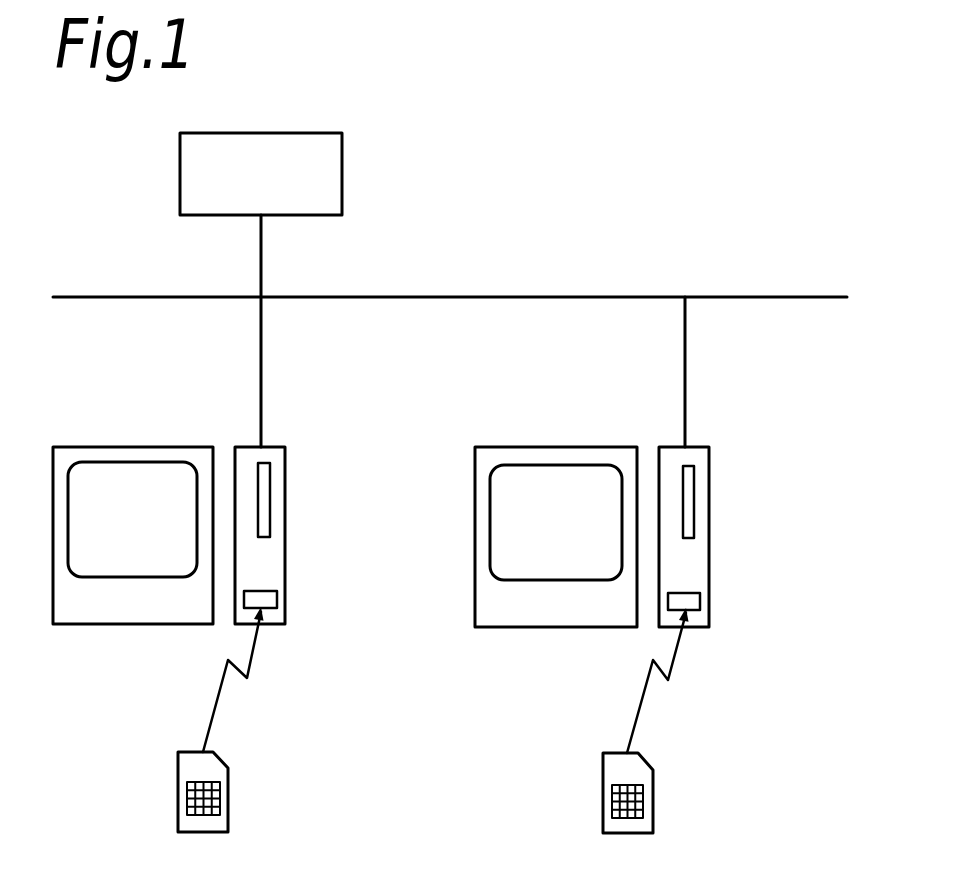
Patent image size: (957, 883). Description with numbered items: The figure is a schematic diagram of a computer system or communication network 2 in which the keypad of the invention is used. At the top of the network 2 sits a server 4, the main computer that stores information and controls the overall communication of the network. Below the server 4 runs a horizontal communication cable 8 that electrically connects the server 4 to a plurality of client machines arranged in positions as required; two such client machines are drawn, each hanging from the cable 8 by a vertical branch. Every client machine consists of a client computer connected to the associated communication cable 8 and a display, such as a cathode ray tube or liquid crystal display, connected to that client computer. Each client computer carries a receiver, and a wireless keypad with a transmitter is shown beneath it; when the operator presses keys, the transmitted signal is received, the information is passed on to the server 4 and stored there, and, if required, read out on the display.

The computer system 2 is at (628, 234).
The server 4 is at (342, 175).
The communication cable 8 is at (510, 297).